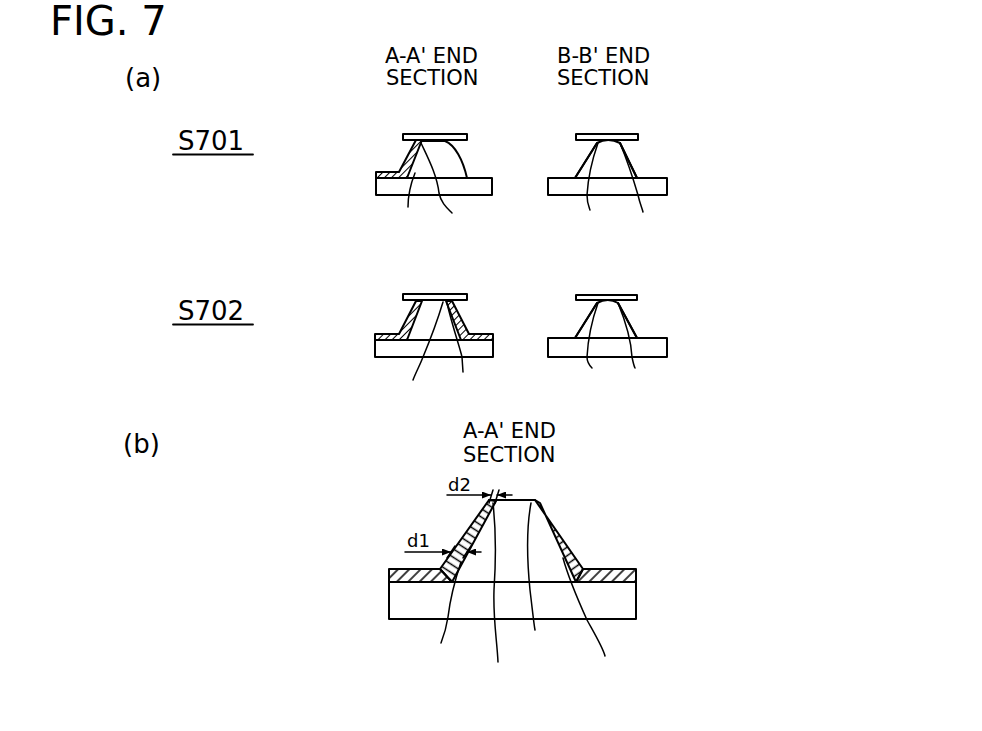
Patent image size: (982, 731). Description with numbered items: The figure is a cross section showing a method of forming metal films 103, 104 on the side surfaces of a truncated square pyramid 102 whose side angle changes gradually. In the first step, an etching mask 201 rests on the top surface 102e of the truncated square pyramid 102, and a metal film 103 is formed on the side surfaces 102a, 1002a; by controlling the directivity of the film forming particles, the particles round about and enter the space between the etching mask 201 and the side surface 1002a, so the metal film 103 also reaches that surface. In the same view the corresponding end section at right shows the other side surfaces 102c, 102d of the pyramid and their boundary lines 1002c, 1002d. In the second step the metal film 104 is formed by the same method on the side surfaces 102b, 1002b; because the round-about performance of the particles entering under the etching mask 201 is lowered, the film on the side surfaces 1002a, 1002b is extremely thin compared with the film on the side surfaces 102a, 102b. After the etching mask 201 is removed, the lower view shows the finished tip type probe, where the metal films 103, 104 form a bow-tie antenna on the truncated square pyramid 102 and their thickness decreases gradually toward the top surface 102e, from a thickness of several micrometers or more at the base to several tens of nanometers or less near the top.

The truncated square pyramid 102 is at (447, 160).
The side surface 102a is at (417, 425).
The side surface 102b is at (467, 165).
The left side face of semiconductor layer 102c is at (586, 158).
The right side face of semiconductor layer 102d is at (632, 167).
The top surface 102e is at (517, 497).
The metal film 103 is at (405, 160).
The metal film 104 is at (464, 327).
The etching mask 201 is at (422, 134).
The side surface 1002a is at (485, 418).
The side surface 1002b is at (462, 480).
The third boundary line 1002c is at (574, 272).
The fourth boundary line 1002d is at (662, 273).